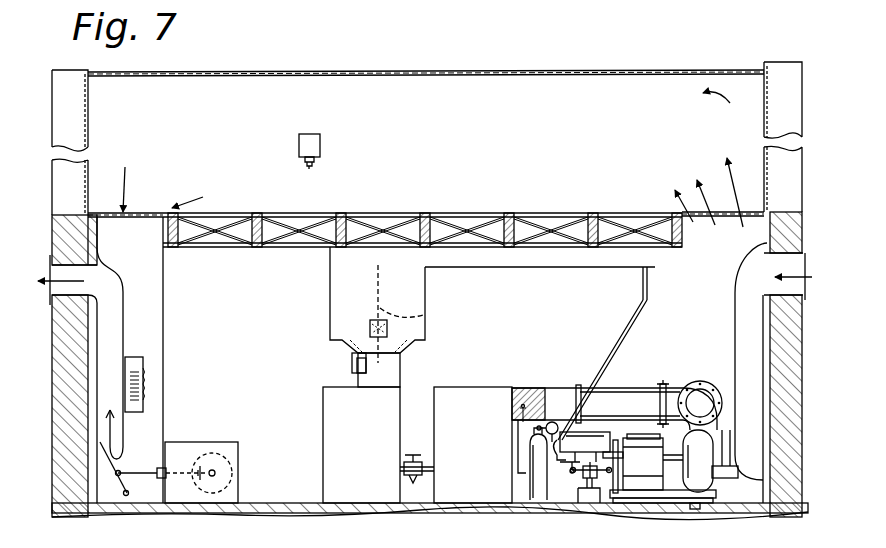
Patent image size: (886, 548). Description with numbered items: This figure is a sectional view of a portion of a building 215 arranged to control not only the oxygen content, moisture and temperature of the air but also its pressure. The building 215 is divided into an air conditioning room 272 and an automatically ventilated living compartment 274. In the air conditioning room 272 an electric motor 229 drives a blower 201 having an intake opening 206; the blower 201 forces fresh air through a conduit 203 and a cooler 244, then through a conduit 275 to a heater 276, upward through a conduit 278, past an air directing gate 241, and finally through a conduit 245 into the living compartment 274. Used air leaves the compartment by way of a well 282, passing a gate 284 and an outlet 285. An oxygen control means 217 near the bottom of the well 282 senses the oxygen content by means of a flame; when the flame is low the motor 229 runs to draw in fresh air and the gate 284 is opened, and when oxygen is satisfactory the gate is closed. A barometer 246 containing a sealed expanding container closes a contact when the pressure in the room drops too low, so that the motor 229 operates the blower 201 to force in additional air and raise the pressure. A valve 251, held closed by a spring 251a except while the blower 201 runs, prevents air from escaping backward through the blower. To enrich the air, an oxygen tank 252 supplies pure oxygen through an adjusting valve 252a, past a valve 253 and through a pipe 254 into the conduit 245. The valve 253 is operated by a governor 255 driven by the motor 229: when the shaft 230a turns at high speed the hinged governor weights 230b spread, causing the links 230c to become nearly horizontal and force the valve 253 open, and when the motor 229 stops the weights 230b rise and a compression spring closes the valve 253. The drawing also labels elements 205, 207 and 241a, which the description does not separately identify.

The blower 201 is at (700, 474).
The conduit 203 is at (664, 385).
The hood 205 is at (350, 313).
The intake opening 206 is at (763, 281).
The flexible hose 207 is at (413, 310).
The building 215 is at (60, 68).
The oxygen control means 217 is at (139, 378).
The electric motor 229 is at (648, 480).
The shaft 230a is at (591, 494).
The governor weights 230b is at (572, 474).
The links 230c is at (592, 468).
The air directing gate 241 is at (350, 357).
The feed line 241a is at (426, 318).
The cooler 244 is at (480, 396).
The conduit 245 is at (580, 268).
The barometer 246 is at (311, 149).
The valve 251 is at (562, 394).
The spring 251a is at (534, 389).
The oxygen tank 252 is at (538, 474).
The adjusting valve 252a is at (536, 431).
The valve 253 is at (593, 436).
The pipe 254 is at (641, 319).
The governor 255 is at (580, 492).
The air conditioning room 272 is at (262, 263).
The living compartment 274 is at (558, 92).
The conduit 275 is at (421, 488).
The heater 276 is at (347, 436).
The conduit 278 is at (391, 371).
The well 282 is at (148, 295).
The gate 284 is at (133, 224).
The outlet 285 is at (112, 456).